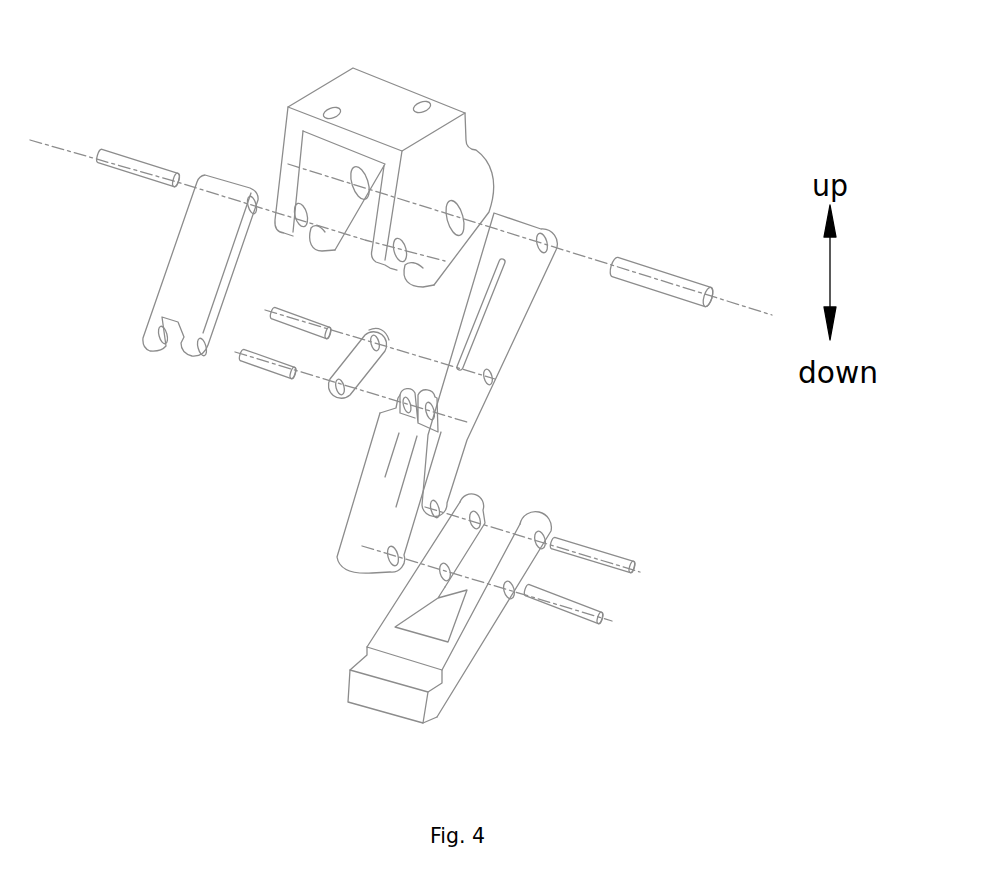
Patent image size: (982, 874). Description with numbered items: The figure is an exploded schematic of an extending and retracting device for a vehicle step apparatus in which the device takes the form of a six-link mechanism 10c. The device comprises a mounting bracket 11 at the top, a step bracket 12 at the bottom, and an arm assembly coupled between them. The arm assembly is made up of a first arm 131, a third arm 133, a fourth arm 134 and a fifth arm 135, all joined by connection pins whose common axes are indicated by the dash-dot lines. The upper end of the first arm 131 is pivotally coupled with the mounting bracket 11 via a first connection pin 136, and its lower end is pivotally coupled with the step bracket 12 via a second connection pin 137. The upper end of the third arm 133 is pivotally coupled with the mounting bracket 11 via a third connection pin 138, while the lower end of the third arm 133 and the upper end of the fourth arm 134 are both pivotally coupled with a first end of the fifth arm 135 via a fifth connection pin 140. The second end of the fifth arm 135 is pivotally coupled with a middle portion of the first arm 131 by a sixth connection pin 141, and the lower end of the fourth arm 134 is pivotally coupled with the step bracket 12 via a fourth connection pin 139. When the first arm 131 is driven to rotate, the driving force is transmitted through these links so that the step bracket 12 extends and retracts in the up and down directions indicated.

The six-link mechanism 10c is at (597, 92).
The mounting bracket 11 is at (373, 96).
The step bracket 12 is at (383, 694).
The first arm 131 is at (498, 322).
The third arm 133 is at (182, 268).
The fourth arm 134 is at (352, 520).
The fifth arm 135 is at (334, 391).
The first connection pin 136 is at (661, 275).
The second connection pin 137 is at (604, 552).
The third connection pin 138 is at (149, 164).
The fourth connection pin 139 is at (584, 607).
The fifth connection pin 140 is at (260, 366).
The sixth connection pin 141 is at (302, 318).